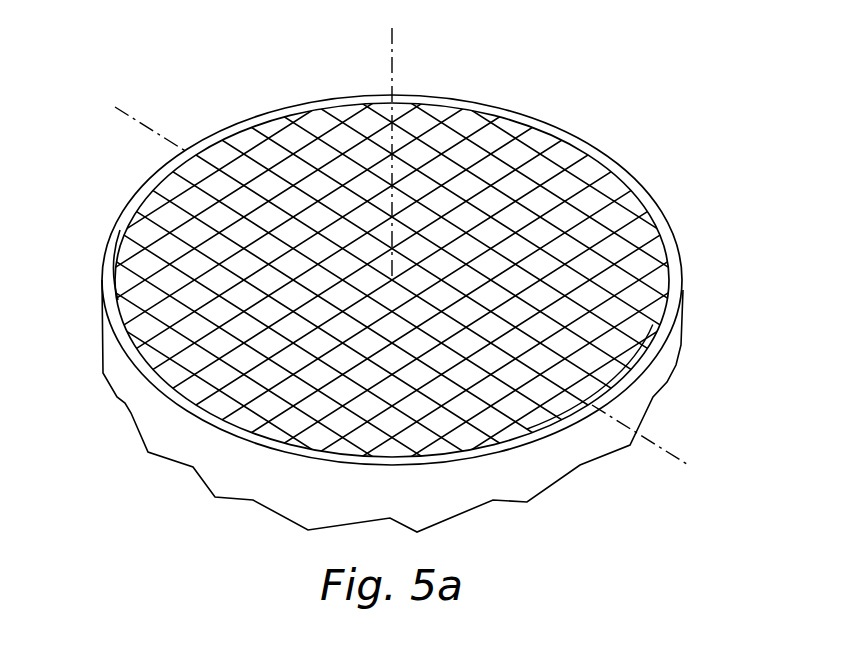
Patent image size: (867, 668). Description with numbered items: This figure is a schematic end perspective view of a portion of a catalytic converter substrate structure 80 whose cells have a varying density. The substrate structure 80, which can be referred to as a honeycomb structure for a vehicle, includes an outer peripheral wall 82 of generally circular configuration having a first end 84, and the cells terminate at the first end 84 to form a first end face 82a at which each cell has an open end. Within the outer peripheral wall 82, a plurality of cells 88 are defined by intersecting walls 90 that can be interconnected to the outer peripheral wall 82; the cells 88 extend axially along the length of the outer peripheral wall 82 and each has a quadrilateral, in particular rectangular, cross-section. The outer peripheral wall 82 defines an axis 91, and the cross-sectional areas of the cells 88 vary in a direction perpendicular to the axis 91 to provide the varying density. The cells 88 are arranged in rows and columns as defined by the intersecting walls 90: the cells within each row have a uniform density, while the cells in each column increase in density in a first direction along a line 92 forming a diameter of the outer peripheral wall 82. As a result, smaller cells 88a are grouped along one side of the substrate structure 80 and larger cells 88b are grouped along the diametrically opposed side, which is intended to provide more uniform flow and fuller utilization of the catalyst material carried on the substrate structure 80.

The catalytic converter substrate structure 80 is at (632, 94).
The outer peripheral wall 82 is at (170, 433).
The first end face 82a is at (634, 185).
The first end 84 is at (132, 198).
The plurality of cells 88 is at (422, 187).
The smaller cells 88a is at (617, 380).
The larger cells 88b is at (293, 143).
The intersecting walls 90 is at (117, 260).
The axis 91 is at (398, 46).
The line 92 is at (124, 107).